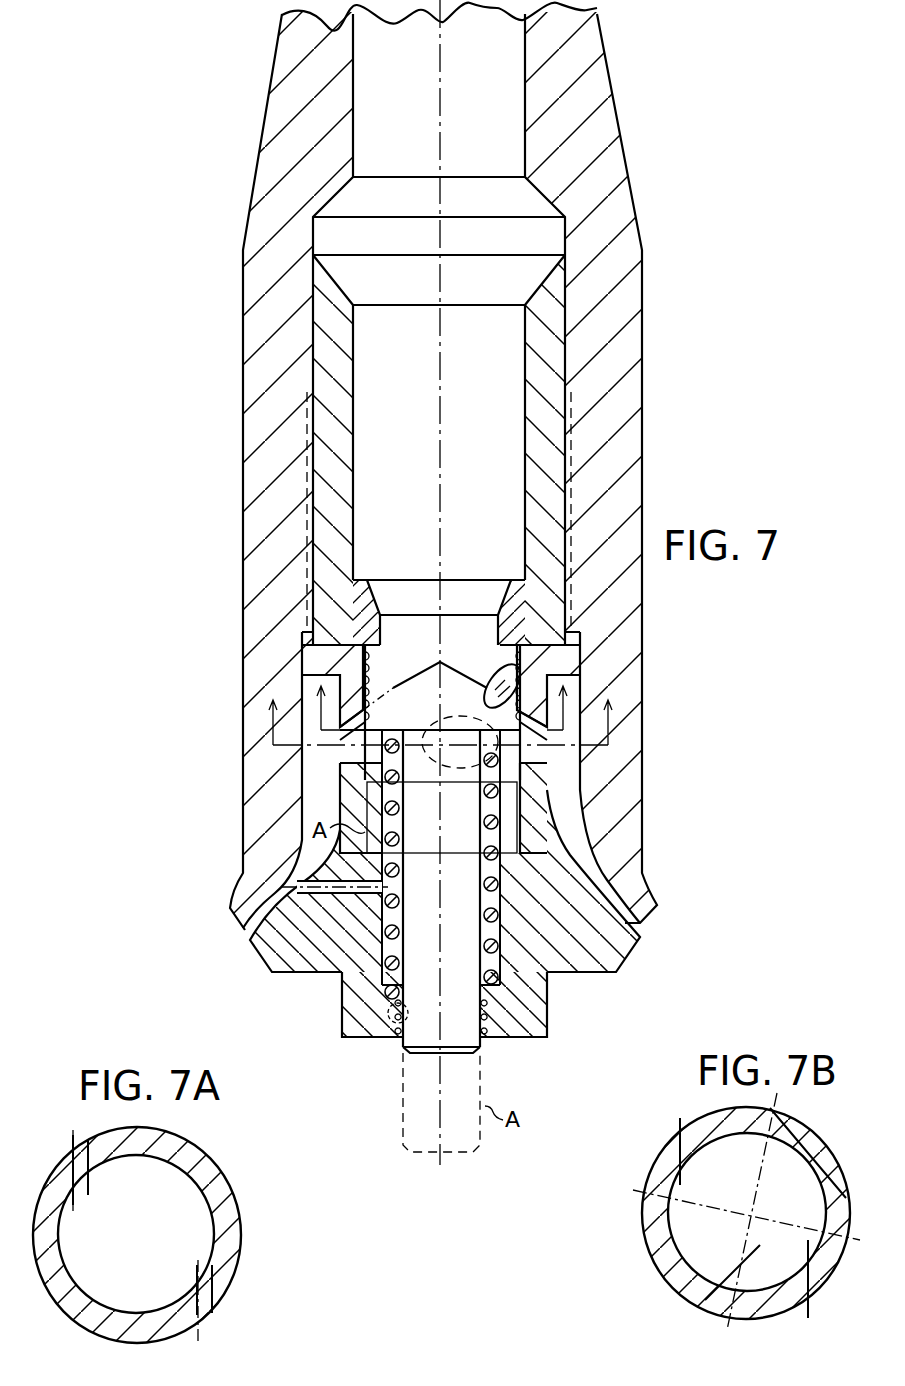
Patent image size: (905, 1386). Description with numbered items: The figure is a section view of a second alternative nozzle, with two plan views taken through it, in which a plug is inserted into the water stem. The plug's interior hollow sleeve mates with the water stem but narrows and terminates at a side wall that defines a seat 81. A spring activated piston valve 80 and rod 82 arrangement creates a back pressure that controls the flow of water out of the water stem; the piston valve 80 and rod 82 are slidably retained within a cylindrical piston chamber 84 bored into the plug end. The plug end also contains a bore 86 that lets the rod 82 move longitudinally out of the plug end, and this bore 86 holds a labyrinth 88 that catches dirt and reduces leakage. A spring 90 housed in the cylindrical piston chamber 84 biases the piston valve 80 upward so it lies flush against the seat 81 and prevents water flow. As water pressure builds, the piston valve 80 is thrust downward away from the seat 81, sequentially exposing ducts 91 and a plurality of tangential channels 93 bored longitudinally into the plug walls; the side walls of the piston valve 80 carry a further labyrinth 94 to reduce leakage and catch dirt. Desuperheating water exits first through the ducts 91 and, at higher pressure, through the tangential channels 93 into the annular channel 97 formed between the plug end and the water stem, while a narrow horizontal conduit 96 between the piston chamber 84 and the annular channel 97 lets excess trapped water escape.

In FIG. 7, the piston valve 80 is at (420, 748).
In FIG. 7, the seat 81 is at (372, 583).
In FIG. 7, the rod 82 is at (483, 1040).
In FIG. 7, the cylindrical piston chamber 84 is at (378, 765).
In FIG. 7, the bore 86 is at (378, 1036).
In FIG. 7, the labyrinth 88 is at (400, 1012).
In FIG. 7, the spring 90 is at (483, 937).
In FIG. 7, the ducts 91 is at (493, 680).
In FIG. 7A, the ducts 91 is at (212, 1315).
In FIG. 7, the tangential channels 93 is at (540, 745).
In FIG. 7B, the tangential channels 93 is at (778, 1110).
In FIG. 7, the labyrinth 94 is at (369, 668).
In FIG. 7, the narrow horizontal conduit 96 is at (256, 948).
In FIG. 7, the annular channel 97 is at (580, 862).